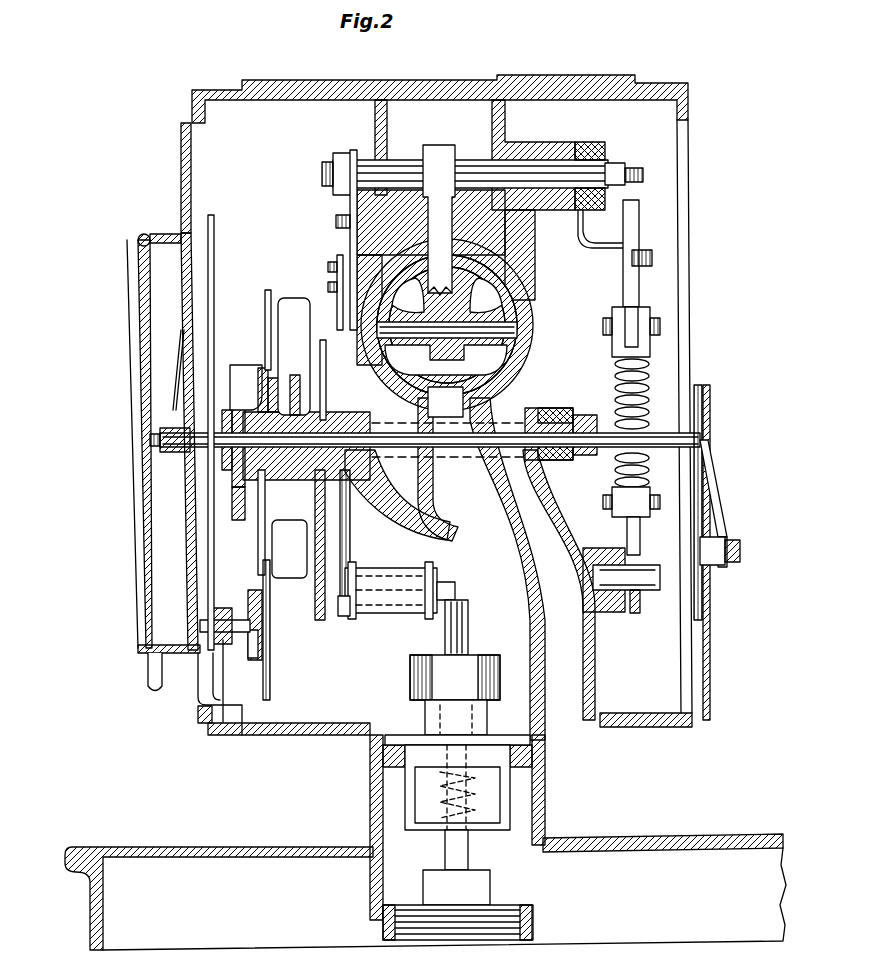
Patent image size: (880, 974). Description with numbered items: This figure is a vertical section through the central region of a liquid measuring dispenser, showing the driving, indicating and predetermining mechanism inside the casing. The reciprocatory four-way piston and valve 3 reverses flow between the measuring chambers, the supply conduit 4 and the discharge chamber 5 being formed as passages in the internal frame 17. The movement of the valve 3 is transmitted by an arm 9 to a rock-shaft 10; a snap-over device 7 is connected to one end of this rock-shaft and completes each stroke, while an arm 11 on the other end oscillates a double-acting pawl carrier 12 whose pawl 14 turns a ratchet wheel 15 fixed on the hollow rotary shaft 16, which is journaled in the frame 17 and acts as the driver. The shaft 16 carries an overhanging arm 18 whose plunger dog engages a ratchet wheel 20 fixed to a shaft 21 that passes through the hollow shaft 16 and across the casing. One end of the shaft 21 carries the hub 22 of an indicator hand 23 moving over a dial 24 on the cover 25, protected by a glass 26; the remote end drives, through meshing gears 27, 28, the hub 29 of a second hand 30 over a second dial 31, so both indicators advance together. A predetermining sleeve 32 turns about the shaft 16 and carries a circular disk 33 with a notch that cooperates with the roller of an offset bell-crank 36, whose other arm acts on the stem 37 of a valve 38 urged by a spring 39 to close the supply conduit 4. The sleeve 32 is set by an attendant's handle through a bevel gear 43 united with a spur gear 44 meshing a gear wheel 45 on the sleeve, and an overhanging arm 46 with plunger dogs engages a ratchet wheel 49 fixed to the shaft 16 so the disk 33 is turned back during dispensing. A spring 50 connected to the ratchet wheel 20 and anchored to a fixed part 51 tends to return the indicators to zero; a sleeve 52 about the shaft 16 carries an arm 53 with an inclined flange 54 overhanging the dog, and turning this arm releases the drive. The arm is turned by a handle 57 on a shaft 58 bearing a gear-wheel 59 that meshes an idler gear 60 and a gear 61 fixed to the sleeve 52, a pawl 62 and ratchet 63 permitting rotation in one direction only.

The reciprocatory four-way piston and valve 3 is at (437, 80).
The supply conduit 4 is at (517, 593).
The discharge chamber 5 is at (397, 495).
The snap-over device 7 is at (655, 357).
The arm 9 is at (442, 232).
The rock-shaft 10 is at (400, 170).
The arm 11 is at (345, 193).
The double-acting pawl carrier 12 is at (350, 232).
The pawl 14 is at (335, 290).
The ratchet wheel 15 is at (350, 520).
The hollow rotary shaft 16 is at (410, 365).
The internal frame 17 is at (533, 366).
The overhanging arm 18 is at (225, 375).
The ratchet wheel 20 is at (228, 492).
The shaft 21 is at (222, 450).
The hub 22 is at (170, 458).
The indicator hand 23 is at (168, 376).
The dial 24 is at (182, 292).
The cover 25 is at (182, 183).
The glass 26 is at (140, 262).
The gear 27 is at (703, 395).
The gear 28 is at (712, 614).
The hub 29 is at (725, 565).
The hand 30 is at (730, 500).
The dial 31 is at (710, 468).
The predetermining sleeve 32 is at (296, 395).
The circular disk 33 is at (323, 365).
The offset bell-crank 36 is at (433, 575).
The stem 37 is at (468, 630).
The valve 38 is at (415, 870).
The spring 39 is at (405, 808).
The bevel gear 43 is at (350, 630).
The spur gear 44 is at (325, 630).
The gear wheel 45 is at (289, 549).
The overhanging arm 46 is at (288, 300).
The ratchet wheel 49 is at (268, 360).
The spring 50 is at (228, 408).
The fixed part 51 is at (225, 518).
The sleeve 52 is at (272, 385).
The arm 53 is at (260, 366).
The flange 54 is at (236, 368).
The handle 57 is at (150, 690).
The shaft 58 is at (233, 645).
The gear-wheel 59 is at (272, 698).
The idler gear 60 is at (262, 555).
The gear 61 is at (258, 528).
The pawl 62 is at (288, 618).
The ratchet 63 is at (270, 660).